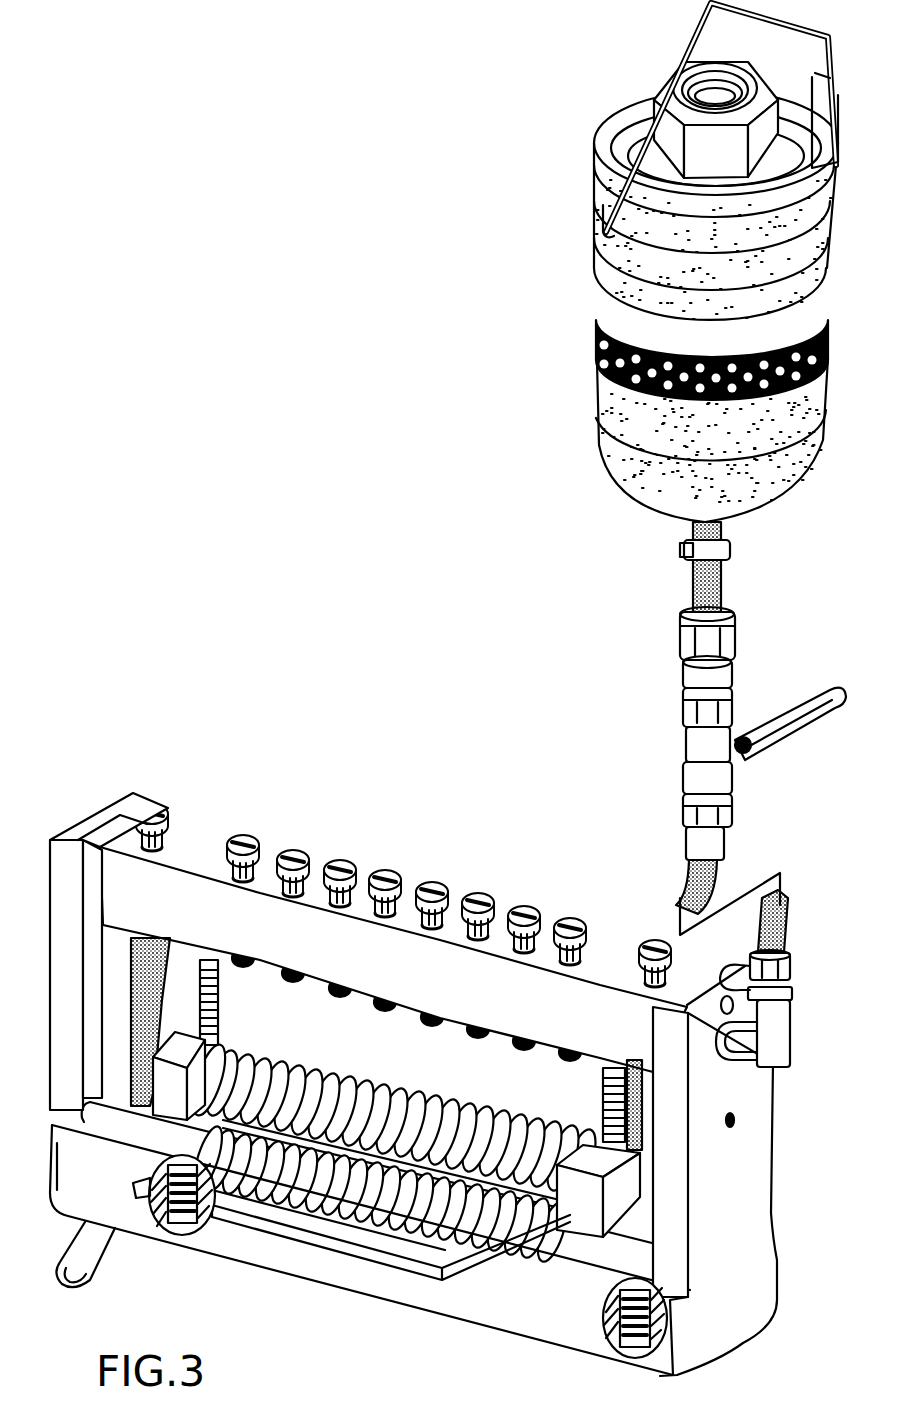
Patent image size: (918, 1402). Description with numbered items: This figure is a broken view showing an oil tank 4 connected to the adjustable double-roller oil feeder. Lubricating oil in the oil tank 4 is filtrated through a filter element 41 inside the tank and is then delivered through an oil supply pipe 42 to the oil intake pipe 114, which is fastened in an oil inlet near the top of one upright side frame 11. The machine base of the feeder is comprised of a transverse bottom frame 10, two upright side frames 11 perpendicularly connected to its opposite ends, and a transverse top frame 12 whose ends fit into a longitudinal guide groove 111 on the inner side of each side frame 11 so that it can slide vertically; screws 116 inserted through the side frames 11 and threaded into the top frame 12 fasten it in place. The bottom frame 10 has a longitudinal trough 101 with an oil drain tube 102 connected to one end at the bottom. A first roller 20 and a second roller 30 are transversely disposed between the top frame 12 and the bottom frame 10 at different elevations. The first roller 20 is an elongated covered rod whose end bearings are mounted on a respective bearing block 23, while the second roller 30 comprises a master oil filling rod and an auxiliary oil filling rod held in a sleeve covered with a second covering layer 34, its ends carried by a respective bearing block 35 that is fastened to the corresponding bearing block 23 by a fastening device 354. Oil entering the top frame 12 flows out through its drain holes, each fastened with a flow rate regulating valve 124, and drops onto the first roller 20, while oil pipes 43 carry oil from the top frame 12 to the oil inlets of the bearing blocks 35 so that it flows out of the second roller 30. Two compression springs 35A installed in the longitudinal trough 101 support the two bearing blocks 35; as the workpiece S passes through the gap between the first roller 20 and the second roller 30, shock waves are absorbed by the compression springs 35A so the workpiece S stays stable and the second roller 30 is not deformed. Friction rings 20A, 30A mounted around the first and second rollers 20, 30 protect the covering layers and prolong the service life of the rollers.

The oil tank 4 is at (612, 511).
The filter element 41 is at (612, 346).
The oil supply pipe 42 is at (694, 600).
The transverse bottom frame 10 is at (330, 1282).
The upright side frames 11 is at (58, 978).
The longitudinal guide groove 111 is at (115, 815).
The transverse top frame 12 is at (201, 845).
The flow rate regulating valve 124 is at (292, 841).
The screws 116 is at (725, 976).
The oil intake pipe 114 is at (772, 1064).
The oil pipes 43 is at (158, 998).
The fastening device 354 is at (214, 1008).
The bearing block 23 is at (210, 1046).
The first roller 20 is at (426, 1100).
The friction rings 20A is at (343, 1072).
The second roller 30 is at (509, 1253).
The friction rings 30A is at (254, 1182).
The second covering layer 34 is at (333, 1204).
The bearing block 35 is at (118, 1124).
The compression springs 35A is at (176, 1236).
The longitudinal trough 101 is at (196, 1247).
The oil drain tube 102 is at (100, 1266).
The workpiece S is at (448, 1274).